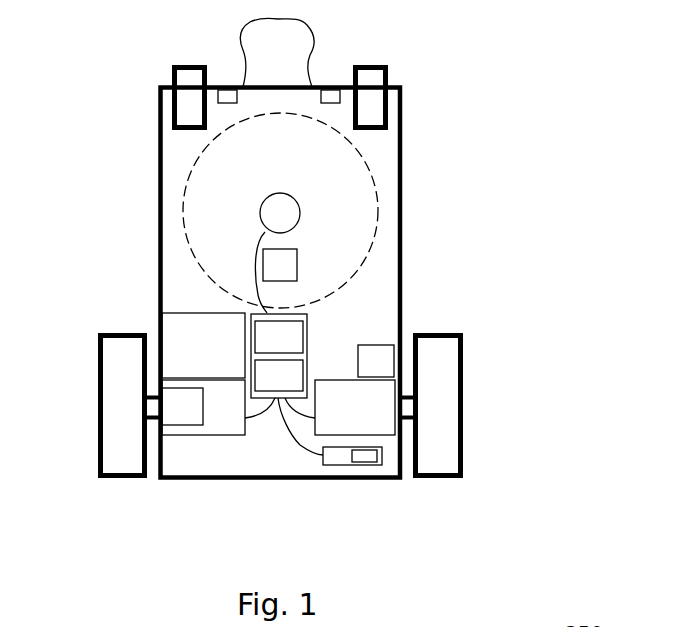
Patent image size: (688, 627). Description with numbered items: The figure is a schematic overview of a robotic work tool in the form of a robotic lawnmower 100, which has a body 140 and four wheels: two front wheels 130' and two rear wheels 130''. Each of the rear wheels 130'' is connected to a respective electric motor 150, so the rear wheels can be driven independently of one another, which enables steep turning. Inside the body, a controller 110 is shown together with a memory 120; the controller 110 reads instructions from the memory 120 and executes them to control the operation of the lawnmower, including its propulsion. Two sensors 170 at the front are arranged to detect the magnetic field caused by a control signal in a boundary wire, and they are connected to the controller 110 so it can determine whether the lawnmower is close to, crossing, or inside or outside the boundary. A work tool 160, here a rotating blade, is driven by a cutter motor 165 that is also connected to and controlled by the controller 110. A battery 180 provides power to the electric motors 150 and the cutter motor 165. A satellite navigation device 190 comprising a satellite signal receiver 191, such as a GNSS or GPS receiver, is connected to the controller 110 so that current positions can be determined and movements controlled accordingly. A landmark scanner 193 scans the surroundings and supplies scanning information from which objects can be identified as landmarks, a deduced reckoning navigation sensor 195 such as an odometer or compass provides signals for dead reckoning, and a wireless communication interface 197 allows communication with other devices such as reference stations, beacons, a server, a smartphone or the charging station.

The robotic lawnmower 100 is at (150, 127).
The controller 110 is at (305, 335).
The memory 120 is at (305, 375).
The front wheels 130' is at (340, 125).
The rear wheels 130'' is at (242, 453).
The body 140 is at (182, 480).
The electric motor 150 is at (318, 418).
The work tool 160 is at (192, 252).
The cutter motor 165 is at (262, 221).
The sensor 170 is at (277, 44).
The battery 180 is at (177, 337).
The satellite navigation device 190 is at (337, 467).
The satellite signal receiver 191 is at (360, 462).
The landmark scanner 193 is at (298, 264).
The deduced reckoning navigation sensor 195 is at (180, 427).
The wireless communication interface 197 is at (395, 362).